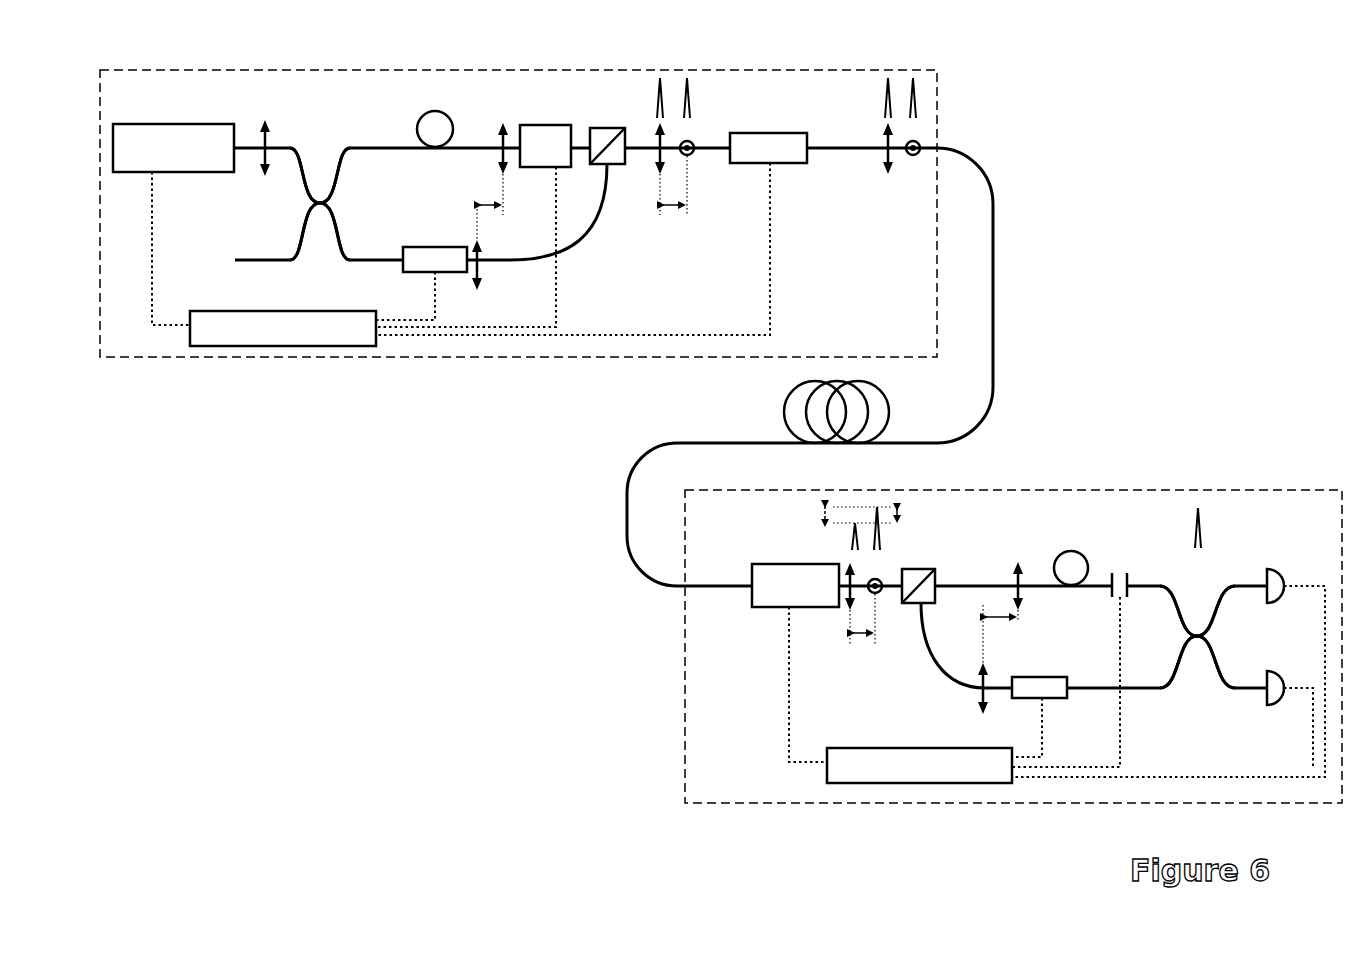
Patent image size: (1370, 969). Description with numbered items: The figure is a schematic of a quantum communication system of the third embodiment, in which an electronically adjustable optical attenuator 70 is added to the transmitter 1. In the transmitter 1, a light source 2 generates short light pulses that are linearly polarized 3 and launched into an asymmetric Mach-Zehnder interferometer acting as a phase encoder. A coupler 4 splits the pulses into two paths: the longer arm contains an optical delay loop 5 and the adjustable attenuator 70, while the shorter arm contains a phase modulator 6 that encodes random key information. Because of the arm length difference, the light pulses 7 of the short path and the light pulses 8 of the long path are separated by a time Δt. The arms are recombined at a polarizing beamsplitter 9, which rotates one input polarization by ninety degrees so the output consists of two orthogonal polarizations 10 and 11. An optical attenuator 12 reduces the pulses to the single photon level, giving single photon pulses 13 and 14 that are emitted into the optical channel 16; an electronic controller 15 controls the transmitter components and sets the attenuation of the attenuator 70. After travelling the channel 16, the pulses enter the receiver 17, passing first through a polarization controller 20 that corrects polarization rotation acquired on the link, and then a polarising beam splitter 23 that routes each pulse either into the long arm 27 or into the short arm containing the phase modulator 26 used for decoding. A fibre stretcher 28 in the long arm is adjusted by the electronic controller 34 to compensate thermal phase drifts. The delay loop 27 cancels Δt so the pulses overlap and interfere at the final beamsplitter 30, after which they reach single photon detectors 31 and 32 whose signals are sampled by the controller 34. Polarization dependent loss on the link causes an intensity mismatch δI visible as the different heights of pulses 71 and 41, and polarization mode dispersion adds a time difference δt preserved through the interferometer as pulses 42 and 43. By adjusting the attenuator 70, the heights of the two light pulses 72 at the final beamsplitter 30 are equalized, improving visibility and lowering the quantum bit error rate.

The transmitter 1 is at (405, 372).
The light source 2 is at (171, 107).
The linear polarization 3 is at (264, 110).
The coupler 4 is at (320, 252).
The optical delay loop 5 is at (430, 104).
The phase modulator 6 is at (450, 283).
The light pulses following the short path 7 is at (474, 199).
The light pulses following the long path 8 is at (501, 112).
The electronically adjustable optical attenuator 70 is at (551, 117).
The polarizing beamsplitter 9 is at (604, 119).
The first orthogonal polarization pulse 10 is at (661, 62).
The second orthogonal polarization pulse 11 is at (689, 46).
The optical attenuator 12 is at (769, 121).
The first single photon pulse 13 is at (888, 62).
The second single photon pulse 14 is at (915, 46).
The electronic controller 15 is at (242, 302).
The optical channel 16 is at (912, 456).
The receiver 17 is at (990, 815).
The polarization controller 20 is at (790, 553).
The received light pulse 41 is at (872, 483).
The received light pulse 71 is at (849, 496).
The polarising beam splitter 23 is at (929, 612).
The light pulse in the interferometer 43 is at (1016, 555).
The long arm / delay loop 27 is at (1069, 545).
The fibre stretcher 28 is at (1119, 532).
The light pulses at the final beamsplitter 72 is at (1194, 483).
The single photon detector 31 is at (1274, 555).
The phase modulator 26 is at (1052, 705).
The light pulse in the interferometer 42 is at (981, 721).
The electronic controller 34 is at (912, 735).
The final beamsplitter 30 is at (1209, 709).
The single photon detector 32 is at (1274, 714).